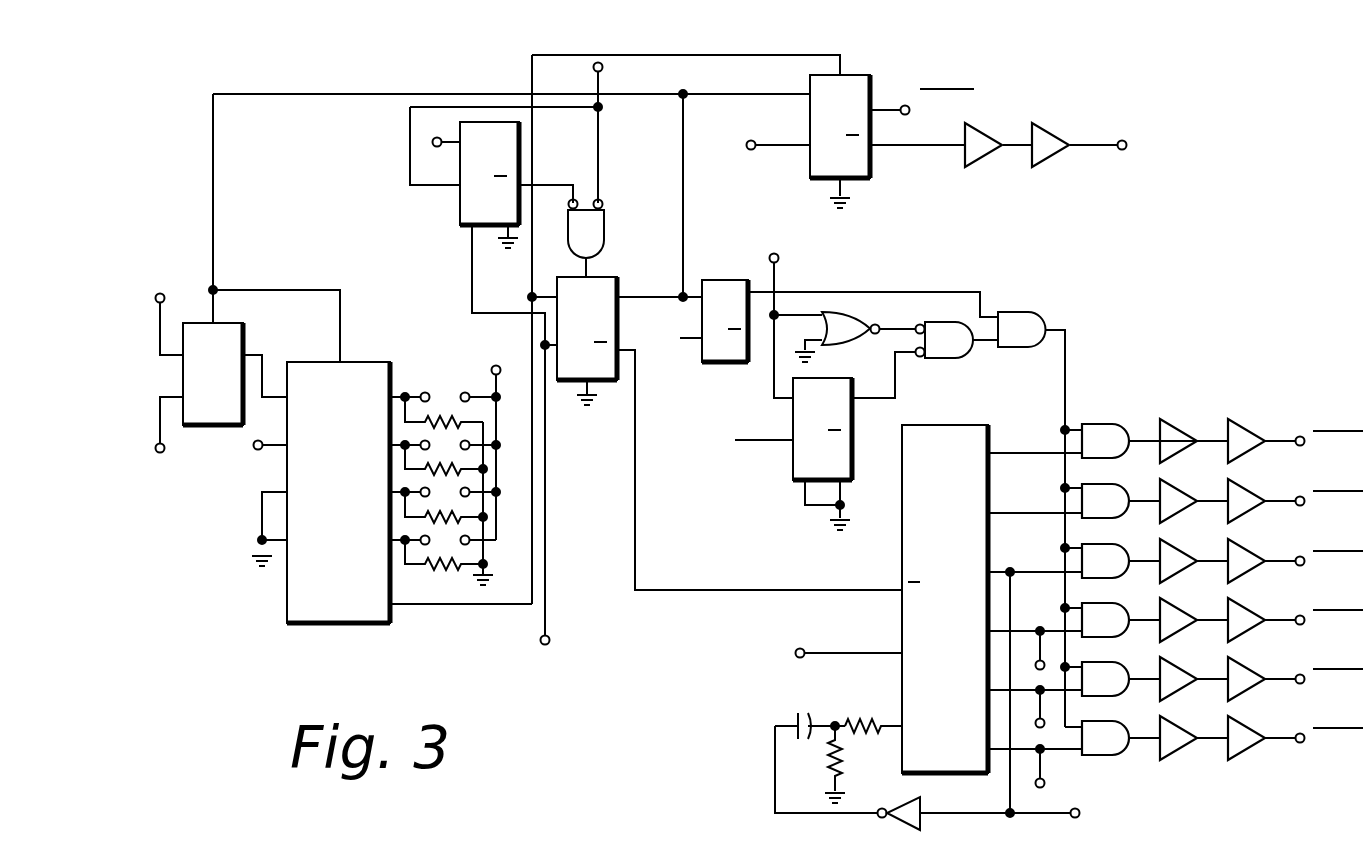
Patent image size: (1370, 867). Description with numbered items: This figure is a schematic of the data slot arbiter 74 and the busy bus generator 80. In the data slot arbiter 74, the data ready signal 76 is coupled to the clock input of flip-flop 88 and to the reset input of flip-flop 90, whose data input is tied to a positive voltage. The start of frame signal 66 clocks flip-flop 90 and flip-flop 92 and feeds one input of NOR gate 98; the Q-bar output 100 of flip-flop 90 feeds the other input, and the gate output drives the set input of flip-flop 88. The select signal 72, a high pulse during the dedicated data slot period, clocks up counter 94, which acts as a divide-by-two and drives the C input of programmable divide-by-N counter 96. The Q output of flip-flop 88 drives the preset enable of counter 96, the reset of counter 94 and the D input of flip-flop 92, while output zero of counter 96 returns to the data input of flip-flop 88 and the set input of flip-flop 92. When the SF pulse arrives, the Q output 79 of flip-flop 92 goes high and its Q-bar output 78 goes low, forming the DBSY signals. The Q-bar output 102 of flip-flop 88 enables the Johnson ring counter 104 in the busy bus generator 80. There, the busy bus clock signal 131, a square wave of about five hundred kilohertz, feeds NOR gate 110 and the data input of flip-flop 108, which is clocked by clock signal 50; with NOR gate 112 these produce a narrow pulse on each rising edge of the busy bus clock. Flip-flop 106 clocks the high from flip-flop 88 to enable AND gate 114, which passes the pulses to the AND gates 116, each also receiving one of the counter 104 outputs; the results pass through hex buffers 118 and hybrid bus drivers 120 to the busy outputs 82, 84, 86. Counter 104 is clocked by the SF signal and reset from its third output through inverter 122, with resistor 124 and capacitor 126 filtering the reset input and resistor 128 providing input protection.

The data slot arbiter 74 is at (346, 196).
The S0-1 signal 72 is at (168, 300).
The up counter 94 is at (239, 321).
The programmable divide-by-N 4-bit counter 96 is at (374, 362).
The flip-flop 90 is at (458, 212).
The Q-bar output of flip-flop 90 100 is at (555, 184).
The start of frame signal 66 is at (599, 150).
The NOR gate 98 is at (606, 235).
The flip-flop 88 is at (611, 281).
The clock signal 50 is at (679, 338).
The flip-flop 106 is at (710, 362).
The busy bus clock signal 131 is at (775, 282).
The NOR gate 110 is at (870, 309).
The NOR gate 112 is at (942, 358).
The AND gate 114 is at (1023, 312).
The flip-flop 108 is at (793, 482).
The Q-bar output of flip-flop 88 102 is at (639, 561).
The data ready signal 76 is at (549, 622).
The Q output of flip-flop 92 (DBSY-bar) 79 is at (899, 110).
The flip-flop 92 is at (808, 175).
The Q-bar output of flip-flop 92 (DBSY) 78 is at (1112, 144).
The busy bus generator 80 is at (1047, 387).
The Johnson ring counter 104 is at (962, 423).
The AND gates 116 is at (1100, 424).
The hex buffers 118 is at (1182, 432).
The hybrid bus drivers 120 is at (1248, 432).
The BSY1 output 82 is at (1296, 440).
The BSY2 output 84 is at (1291, 500).
The BSY3 output 86 is at (1292, 560).
The capacitor 126 is at (802, 711).
The resistor 128 is at (864, 719).
The resistor 124 is at (843, 762).
The inverter 122 is at (915, 795).